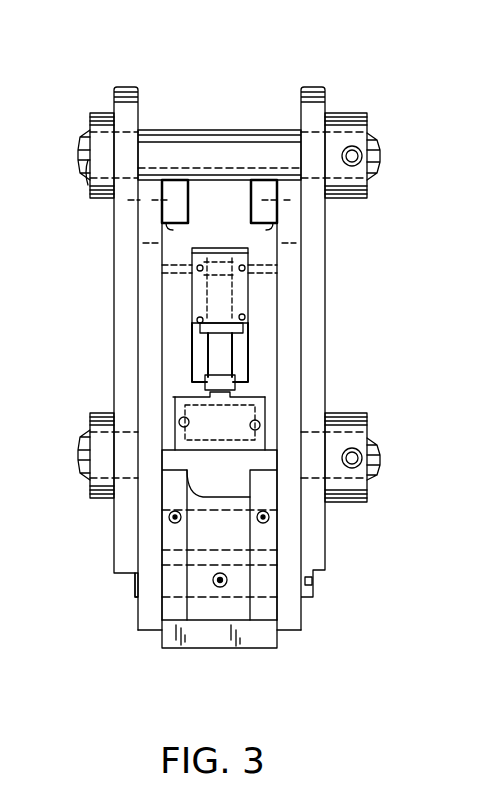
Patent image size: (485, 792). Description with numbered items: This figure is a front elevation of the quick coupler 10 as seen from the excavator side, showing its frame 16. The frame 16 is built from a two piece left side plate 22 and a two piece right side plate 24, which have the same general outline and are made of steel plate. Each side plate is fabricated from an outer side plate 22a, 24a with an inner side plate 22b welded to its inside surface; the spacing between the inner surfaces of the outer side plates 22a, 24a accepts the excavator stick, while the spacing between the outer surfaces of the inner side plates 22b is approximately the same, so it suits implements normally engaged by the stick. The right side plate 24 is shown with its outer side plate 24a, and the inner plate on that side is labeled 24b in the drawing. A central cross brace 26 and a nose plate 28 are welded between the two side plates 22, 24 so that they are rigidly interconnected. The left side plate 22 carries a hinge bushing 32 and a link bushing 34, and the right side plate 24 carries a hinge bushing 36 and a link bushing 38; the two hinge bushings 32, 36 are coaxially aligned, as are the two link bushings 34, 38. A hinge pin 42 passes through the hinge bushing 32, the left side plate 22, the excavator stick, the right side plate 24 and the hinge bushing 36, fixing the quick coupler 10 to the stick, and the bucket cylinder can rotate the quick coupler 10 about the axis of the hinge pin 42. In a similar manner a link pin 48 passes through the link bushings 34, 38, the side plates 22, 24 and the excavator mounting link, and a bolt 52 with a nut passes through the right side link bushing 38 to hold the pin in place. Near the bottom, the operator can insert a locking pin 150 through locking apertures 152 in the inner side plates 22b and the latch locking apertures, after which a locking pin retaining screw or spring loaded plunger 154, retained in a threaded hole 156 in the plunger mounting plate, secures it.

The quick coupler 10 is at (215, 95).
The frame 16 is at (345, 324).
The left side plate 22 is at (100, 261).
The outer side plate 22a is at (114, 288).
The inner side plate 22b is at (148, 318).
The right side plate 24 is at (340, 256).
The outer side plate 24a is at (327, 223).
The guide post 24b is at (290, 281).
The central cross brace 26 is at (175, 343).
The nose plate 28 is at (177, 655).
The hinge bushing 32 is at (90, 112).
The link bushing 34 is at (103, 413).
The hinge bushing 36 is at (350, 112).
The link bushing 38 is at (348, 413).
The hinge pin 42 is at (88, 168).
The link pin 48 is at (80, 472).
The bolt 52 is at (356, 467).
The locking pin 150 is at (133, 582).
The locking apertures 152 is at (137, 597).
The locking pin retaining screw or spring loaded plunger 154 is at (225, 585).
The threaded hole 156 is at (213, 587).